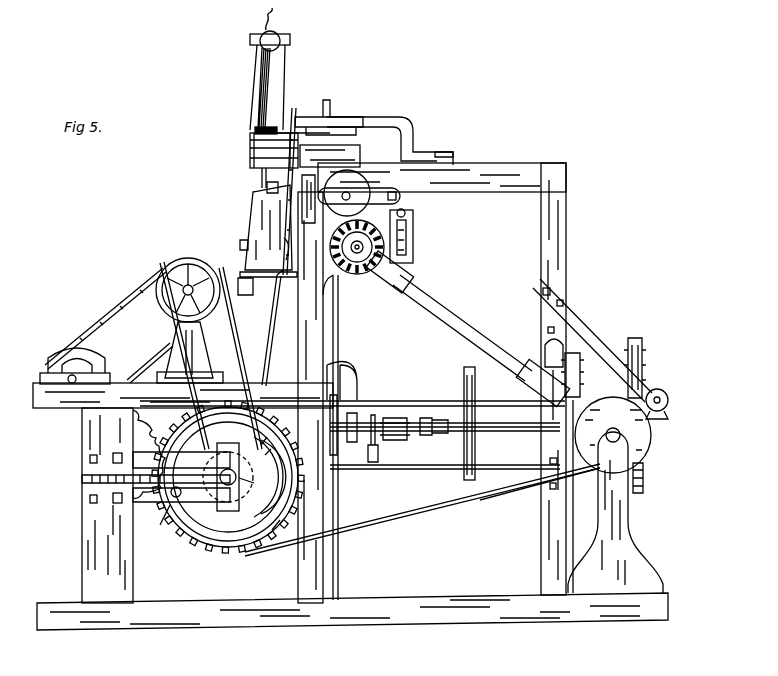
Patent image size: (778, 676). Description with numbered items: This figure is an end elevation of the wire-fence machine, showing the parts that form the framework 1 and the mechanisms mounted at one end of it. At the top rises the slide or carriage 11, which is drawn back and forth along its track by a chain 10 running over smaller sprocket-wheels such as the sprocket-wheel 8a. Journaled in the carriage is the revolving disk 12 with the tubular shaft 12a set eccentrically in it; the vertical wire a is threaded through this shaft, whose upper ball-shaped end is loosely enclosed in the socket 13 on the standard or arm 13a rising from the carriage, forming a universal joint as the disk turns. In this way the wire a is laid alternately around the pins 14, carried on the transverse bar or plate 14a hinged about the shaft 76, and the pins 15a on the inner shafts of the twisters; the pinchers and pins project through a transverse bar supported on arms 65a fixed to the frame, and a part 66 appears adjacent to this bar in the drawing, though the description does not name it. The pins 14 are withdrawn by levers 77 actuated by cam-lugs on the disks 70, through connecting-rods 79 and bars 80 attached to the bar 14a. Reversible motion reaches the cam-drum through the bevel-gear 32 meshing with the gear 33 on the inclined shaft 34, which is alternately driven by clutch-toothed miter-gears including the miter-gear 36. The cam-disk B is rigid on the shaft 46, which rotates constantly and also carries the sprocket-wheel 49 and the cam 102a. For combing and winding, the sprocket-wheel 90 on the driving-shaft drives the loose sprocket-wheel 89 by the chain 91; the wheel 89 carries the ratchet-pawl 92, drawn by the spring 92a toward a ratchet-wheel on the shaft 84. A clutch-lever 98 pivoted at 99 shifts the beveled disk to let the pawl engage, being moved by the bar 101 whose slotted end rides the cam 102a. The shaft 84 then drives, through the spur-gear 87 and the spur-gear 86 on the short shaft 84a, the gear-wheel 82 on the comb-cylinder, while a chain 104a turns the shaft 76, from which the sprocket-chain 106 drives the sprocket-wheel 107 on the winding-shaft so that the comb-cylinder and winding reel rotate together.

The framework 1 is at (350, 396).
The vertical wire a is at (264, 17).
The socket 13 is at (277, 36).
The standard or arm 13a is at (282, 58).
The tubular shaft 12a is at (270, 91).
The sprocket-wheel 8a is at (288, 122).
The revolving disk 12 is at (252, 140).
The slide or carriage 11 is at (360, 157).
The pins 14 is at (261, 187).
The pins 15a is at (265, 194).
The box 66 is at (252, 227).
The transverse bar or plate 14a is at (246, 247).
The chain 10 is at (291, 252).
The bars 80 is at (279, 278).
The bevel-gear 32 is at (357, 268).
The bevel-gear 33 is at (389, 272).
The inclined shaft 34 is at (462, 328).
The sprocket-wheel 90 is at (572, 385).
The cam-disk B is at (642, 362).
The miter-gear 36 is at (648, 442).
The chain 91 is at (436, 505).
The shaft 46 is at (444, 459).
The sprocket-wheel 49 is at (474, 446).
The clutch-lever 98 is at (430, 470).
The disks 70 is at (343, 429).
The bar 101 is at (374, 468).
The cam 102a is at (415, 440).
The levers 77 is at (348, 390).
The pivot 99 is at (540, 466).
The connecting-rods 79 is at (336, 346).
The shaft 76 is at (180, 260).
The sprocket-chain 106 is at (105, 318).
The sprocket-wheel 107 is at (88, 360).
The chain 104a is at (226, 336).
The arms 65a is at (263, 345).
The shaft 84 is at (217, 450).
The ratchet-pawl 92 is at (281, 477).
The spring 92a is at (270, 436).
The spur-gear 87 is at (252, 482).
The sprocket-wheel 89 is at (273, 536).
The short shaft 84a is at (168, 527).
The gear-wheel 82 is at (149, 454).
The spur-gear 86 is at (181, 490).